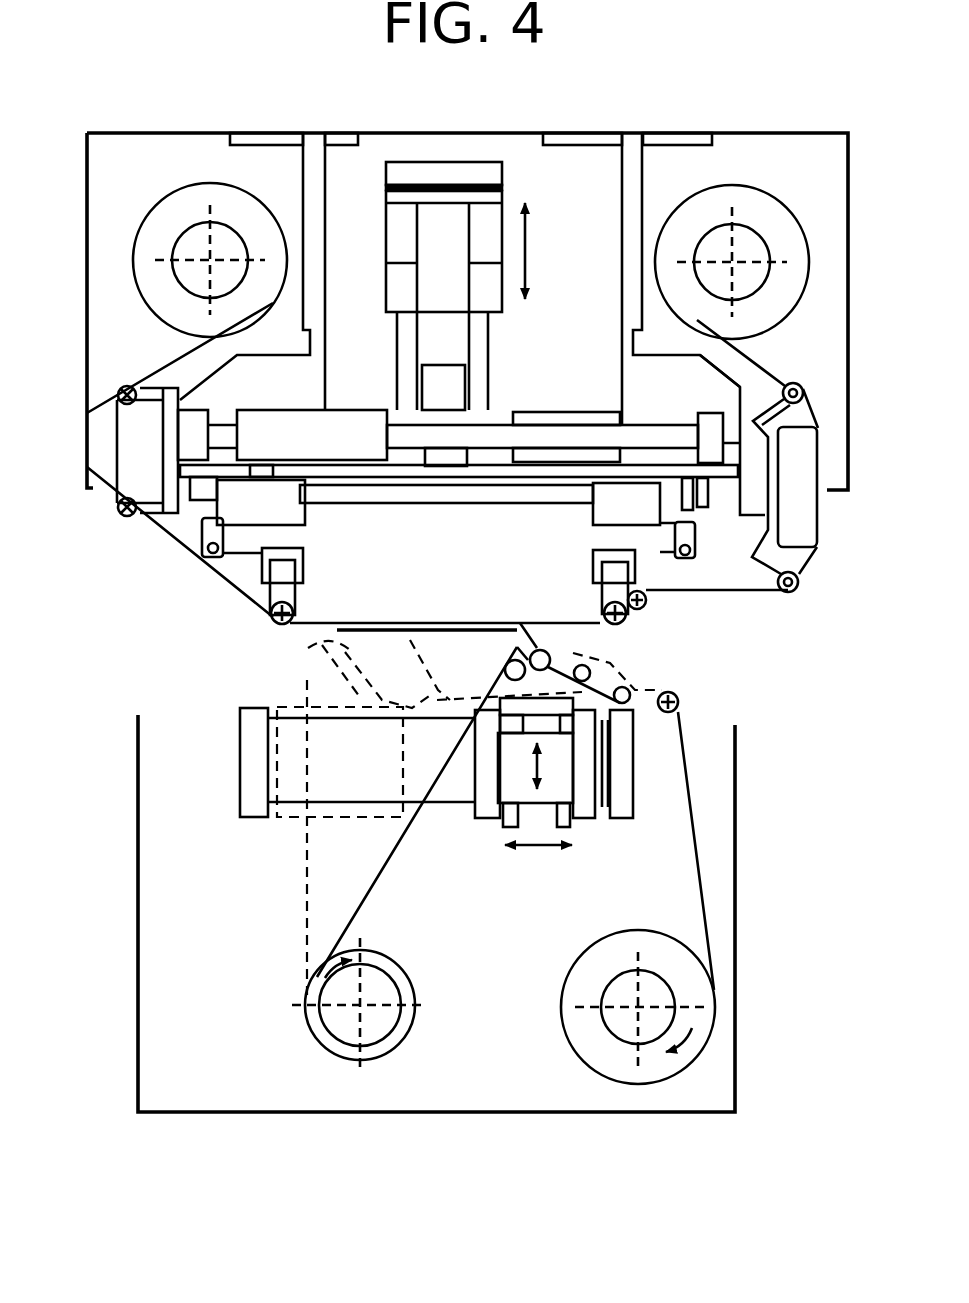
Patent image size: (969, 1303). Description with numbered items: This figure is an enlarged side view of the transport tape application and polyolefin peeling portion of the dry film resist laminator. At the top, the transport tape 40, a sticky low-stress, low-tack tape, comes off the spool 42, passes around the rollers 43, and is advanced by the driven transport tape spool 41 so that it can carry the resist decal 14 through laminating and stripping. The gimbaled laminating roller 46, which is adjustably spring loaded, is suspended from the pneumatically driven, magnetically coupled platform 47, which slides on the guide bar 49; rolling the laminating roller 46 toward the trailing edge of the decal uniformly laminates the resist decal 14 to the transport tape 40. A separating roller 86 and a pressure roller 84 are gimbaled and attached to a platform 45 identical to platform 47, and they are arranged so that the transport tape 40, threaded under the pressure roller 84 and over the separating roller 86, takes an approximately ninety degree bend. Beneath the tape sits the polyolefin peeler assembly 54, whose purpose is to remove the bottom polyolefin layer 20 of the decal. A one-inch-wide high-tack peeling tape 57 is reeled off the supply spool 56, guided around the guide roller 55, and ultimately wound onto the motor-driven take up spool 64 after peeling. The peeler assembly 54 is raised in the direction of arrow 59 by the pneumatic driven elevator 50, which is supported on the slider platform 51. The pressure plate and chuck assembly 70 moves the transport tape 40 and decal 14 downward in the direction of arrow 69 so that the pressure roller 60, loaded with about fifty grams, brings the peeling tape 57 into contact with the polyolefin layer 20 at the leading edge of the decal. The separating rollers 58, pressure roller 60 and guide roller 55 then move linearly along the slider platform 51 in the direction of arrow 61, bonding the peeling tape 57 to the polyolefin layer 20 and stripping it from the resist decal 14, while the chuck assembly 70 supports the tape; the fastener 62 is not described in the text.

The resist decal 14 is at (152, 573).
The polyolefin layer 20 is at (373, 627).
The transport tape 40 is at (763, 362).
The transport tape spool 41 is at (788, 212).
The spool 42 is at (183, 193).
The rollers 43 is at (117, 506).
The platform 45 is at (637, 507).
The gimbaled laminating roller 46 is at (272, 618).
The platform 47 is at (307, 512).
The guide bar 49 is at (498, 503).
The pneumatic driven elevator 50 is at (562, 788).
The slider platform 51 is at (450, 820).
The polyolefin peeler assembly 54 is at (789, 644).
The guide roller 55 is at (525, 657).
The supply spool 56 is at (412, 983).
The peeling tape 57 is at (357, 910).
The separating rollers 58 is at (433, 660).
The arrow 59 is at (542, 763).
The pressure roller 60 is at (550, 650).
The arrow 61 is at (535, 848).
The screw 62 is at (678, 710).
The take up spool 64 is at (697, 1057).
The arrow 69 is at (528, 258).
The pressure plate and chuck assembly 70 is at (507, 360).
The pressure roller 84 is at (626, 621).
The separating roller 86 is at (648, 603).